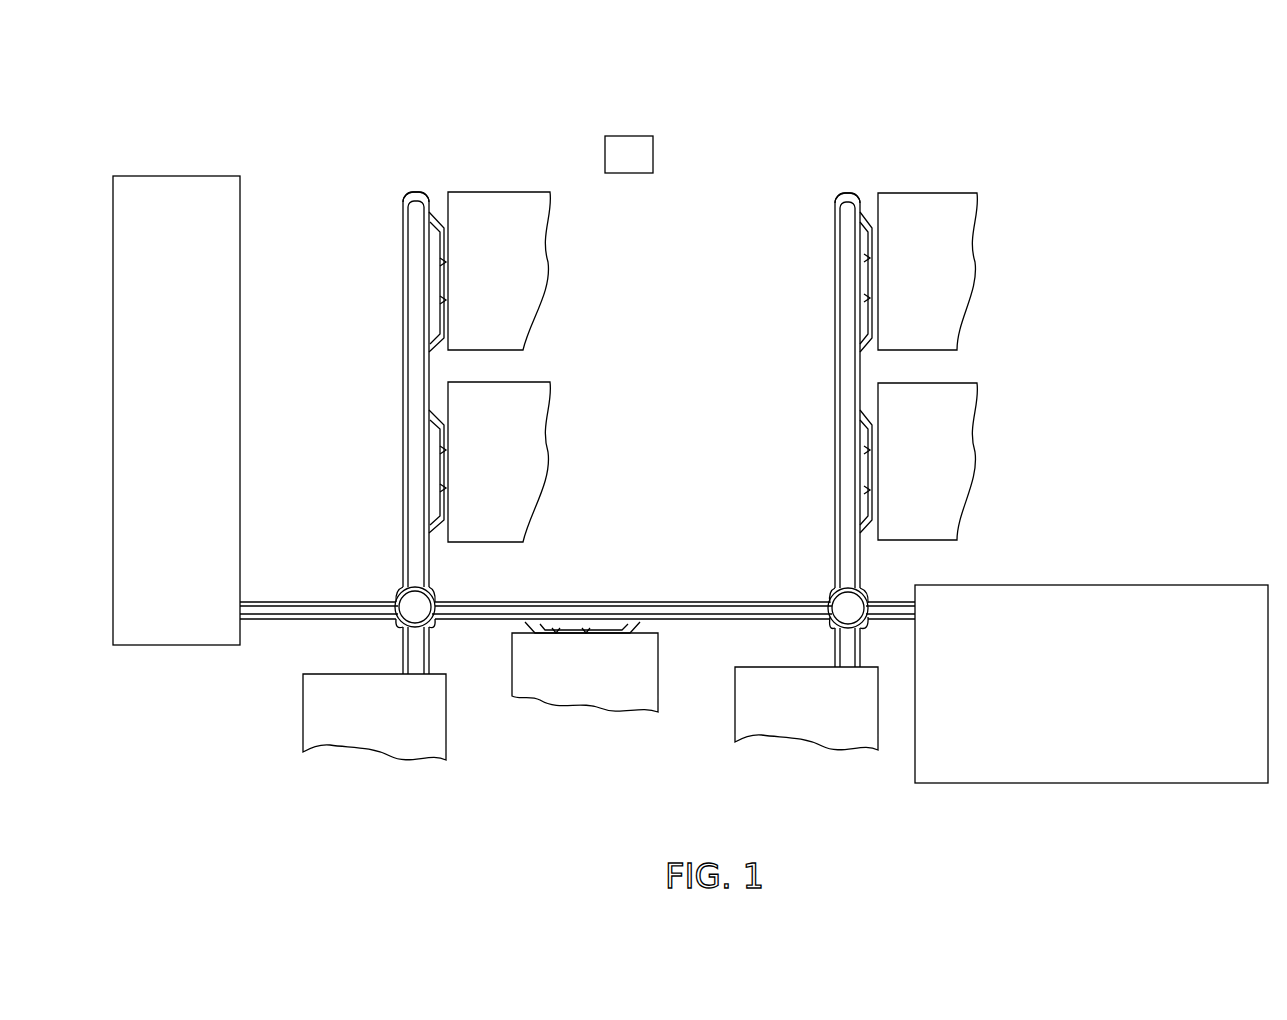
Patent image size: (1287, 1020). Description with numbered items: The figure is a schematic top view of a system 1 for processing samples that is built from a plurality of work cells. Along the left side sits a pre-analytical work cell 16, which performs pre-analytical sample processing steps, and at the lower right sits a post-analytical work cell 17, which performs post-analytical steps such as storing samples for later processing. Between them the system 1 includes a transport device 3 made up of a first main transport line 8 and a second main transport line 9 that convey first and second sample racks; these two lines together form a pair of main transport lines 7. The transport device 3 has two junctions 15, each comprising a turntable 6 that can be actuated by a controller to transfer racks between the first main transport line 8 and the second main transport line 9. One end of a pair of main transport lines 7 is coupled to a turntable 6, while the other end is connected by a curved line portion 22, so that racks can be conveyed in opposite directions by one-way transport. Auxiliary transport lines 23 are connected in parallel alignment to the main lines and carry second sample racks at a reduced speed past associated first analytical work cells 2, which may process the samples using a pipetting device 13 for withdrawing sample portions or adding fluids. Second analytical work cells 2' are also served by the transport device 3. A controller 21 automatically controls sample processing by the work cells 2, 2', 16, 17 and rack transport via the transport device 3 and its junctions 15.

The system 1 is at (77, 90).
The first analytical work cell 2 is at (712, 452).
The second analytical work cell 2' is at (590, 713).
The transport device 3 is at (333, 192).
The turntable 6 is at (412, 613).
The pair of main transport lines 7 is at (571, 429).
The first main transport line 8 is at (428, 366).
The second main transport line 9 is at (408, 368).
The pipetting device 13 is at (444, 262).
The junction 15 is at (592, 564).
The pre-analytical work cell 16 is at (176, 410).
The post-analytical work cell 17 is at (1091, 684).
The controller 21 is at (627, 136).
The curved line portion 22 is at (420, 195).
The auxiliary transport line 23 is at (616, 447).